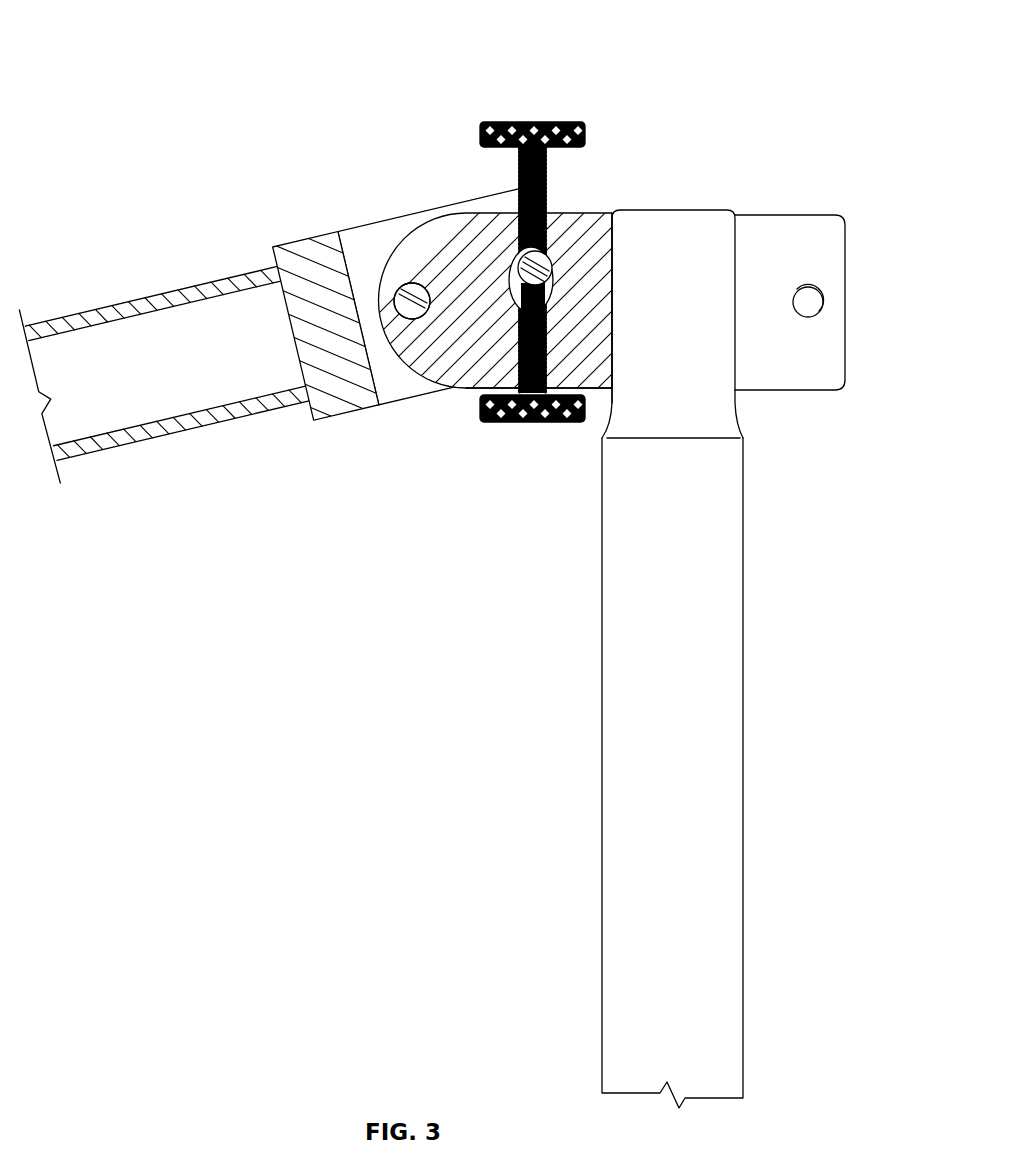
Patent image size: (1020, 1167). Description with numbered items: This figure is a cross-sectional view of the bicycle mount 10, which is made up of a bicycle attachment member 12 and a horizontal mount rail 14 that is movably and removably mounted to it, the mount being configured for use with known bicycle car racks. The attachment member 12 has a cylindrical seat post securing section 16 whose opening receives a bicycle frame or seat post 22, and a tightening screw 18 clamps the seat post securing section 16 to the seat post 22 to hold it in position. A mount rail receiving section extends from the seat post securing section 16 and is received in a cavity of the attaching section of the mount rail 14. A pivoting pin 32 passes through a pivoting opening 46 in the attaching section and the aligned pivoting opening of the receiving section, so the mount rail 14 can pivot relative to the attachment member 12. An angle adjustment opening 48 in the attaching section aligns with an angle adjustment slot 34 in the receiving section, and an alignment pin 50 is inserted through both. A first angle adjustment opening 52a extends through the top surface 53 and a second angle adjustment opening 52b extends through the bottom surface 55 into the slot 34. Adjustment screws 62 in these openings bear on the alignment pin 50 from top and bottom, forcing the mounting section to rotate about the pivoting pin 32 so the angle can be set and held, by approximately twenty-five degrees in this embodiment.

The bicycle mount 10 is at (726, 557).
The bicycle attachment member 12 is at (829, 176).
The horizontal mount rail 14 is at (288, 347).
The seat post securing section 16 is at (843, 218).
The tightening screw 18 is at (799, 314).
The bicycle frame or seat post 22 is at (600, 797).
The pivoting pin 32 is at (414, 320).
The angle adjustment slot 34 is at (548, 292).
The pivoting opening 46 is at (427, 283).
The angle adjustment opening 48 is at (556, 258).
The alignment pin 50 is at (553, 282).
The first angle adjustment opening 52a is at (548, 197).
The second angle adjustment opening 52b is at (595, 400).
The top surface 53 is at (475, 212).
The bottom surface 55 is at (472, 389).
The adjustment screws 62 is at (586, 132).